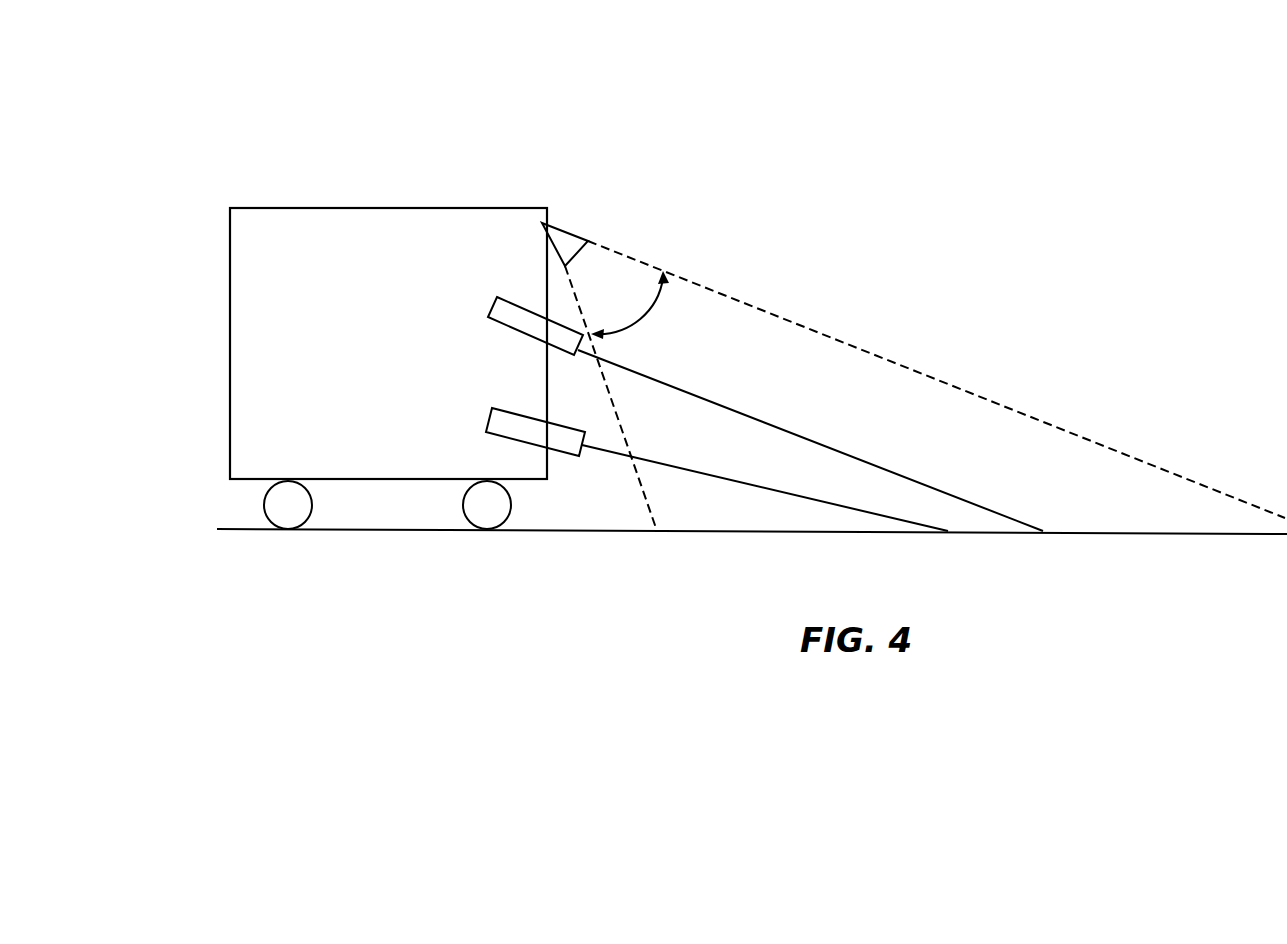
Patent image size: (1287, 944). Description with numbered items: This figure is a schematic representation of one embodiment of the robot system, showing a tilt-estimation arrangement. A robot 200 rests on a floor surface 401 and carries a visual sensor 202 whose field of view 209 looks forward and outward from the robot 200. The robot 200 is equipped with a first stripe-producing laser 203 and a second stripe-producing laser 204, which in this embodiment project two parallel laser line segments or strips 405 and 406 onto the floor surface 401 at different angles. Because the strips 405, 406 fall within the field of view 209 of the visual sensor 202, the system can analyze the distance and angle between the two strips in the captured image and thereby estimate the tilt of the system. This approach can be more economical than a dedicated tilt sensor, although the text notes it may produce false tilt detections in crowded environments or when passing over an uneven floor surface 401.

The robot 200 is at (265, 348).
The visual sensor 202 is at (560, 243).
The first stripe-producing laser 203 is at (487, 316).
The second stripe-producing laser 204 is at (558, 457).
The field of view 209 is at (653, 324).
The floor surface 401 is at (242, 533).
The laser line segment or strip 405 is at (805, 435).
The laser line segment or strip 406 is at (865, 505).